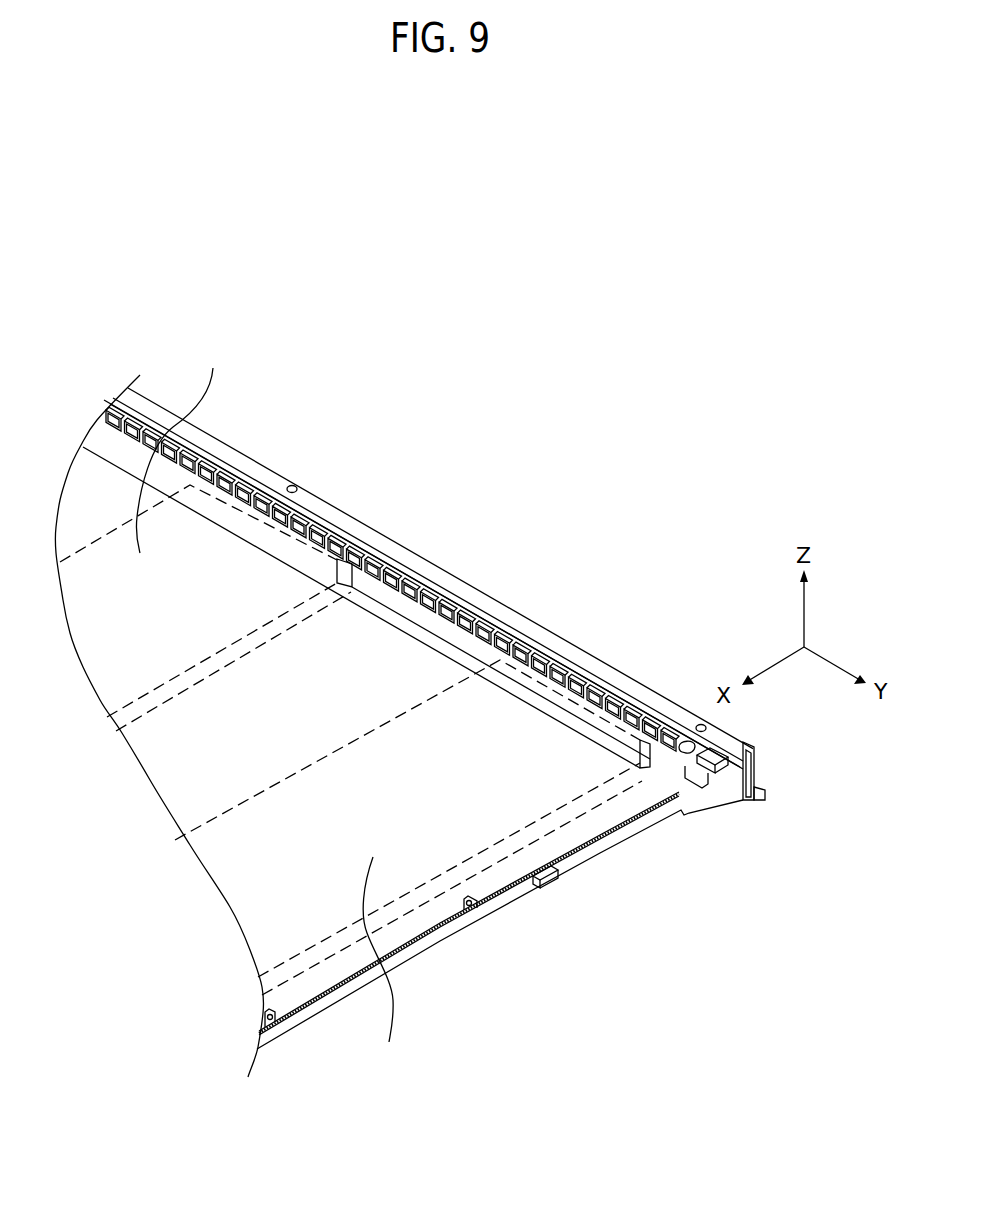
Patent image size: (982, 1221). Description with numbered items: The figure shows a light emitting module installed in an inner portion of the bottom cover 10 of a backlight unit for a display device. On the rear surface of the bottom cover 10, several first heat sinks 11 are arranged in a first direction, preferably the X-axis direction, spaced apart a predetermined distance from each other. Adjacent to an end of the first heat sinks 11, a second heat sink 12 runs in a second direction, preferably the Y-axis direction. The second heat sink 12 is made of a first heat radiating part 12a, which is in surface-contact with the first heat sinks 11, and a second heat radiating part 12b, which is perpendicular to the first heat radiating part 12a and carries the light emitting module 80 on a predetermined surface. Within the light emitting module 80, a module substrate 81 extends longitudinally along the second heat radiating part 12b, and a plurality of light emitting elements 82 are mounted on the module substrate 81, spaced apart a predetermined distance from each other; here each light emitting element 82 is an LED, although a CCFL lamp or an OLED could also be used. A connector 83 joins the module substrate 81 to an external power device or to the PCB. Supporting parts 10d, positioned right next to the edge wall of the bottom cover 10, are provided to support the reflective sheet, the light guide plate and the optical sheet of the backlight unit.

The bottom cover 10 is at (628, 836).
The supporting part 10d is at (476, 902).
The first heat sink 11 is at (211, 368).
The second heat sink 12 is at (423, 584).
The first heat radiating part 12a is at (428, 633).
The second heat radiating part 12b is at (393, 555).
The light emitting module 80 is at (425, 596).
The module substrate 81 is at (340, 530).
The light emitting element 82 is at (644, 720).
The connector 83 is at (681, 740).